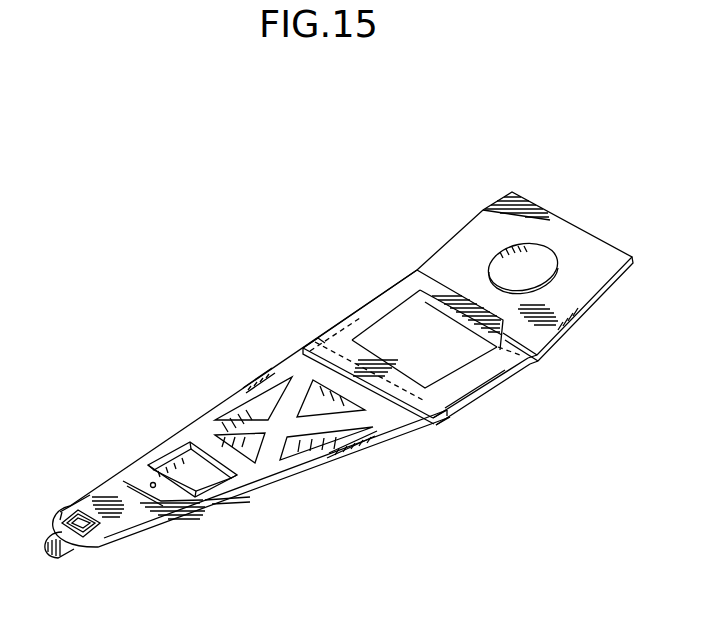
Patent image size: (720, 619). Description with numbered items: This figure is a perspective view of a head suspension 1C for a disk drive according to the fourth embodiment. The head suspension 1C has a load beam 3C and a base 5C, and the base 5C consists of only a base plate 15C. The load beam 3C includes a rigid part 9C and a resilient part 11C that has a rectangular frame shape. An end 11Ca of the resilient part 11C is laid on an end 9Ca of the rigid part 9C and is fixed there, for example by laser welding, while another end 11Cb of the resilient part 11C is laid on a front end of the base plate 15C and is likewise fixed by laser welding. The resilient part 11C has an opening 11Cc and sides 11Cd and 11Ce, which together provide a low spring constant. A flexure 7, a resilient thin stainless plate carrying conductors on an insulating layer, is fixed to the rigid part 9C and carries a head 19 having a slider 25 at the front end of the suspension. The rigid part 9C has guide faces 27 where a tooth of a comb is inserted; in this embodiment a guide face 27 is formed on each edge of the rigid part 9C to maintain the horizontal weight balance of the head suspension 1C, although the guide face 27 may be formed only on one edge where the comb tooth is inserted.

The head suspension 1C is at (279, 198).
The load beam 3C is at (208, 405).
The base 5C is at (512, 197).
The flexure 7 is at (120, 492).
The rigid part 9C is at (153, 445).
The end of the rigid part 9Ca is at (433, 422).
The resilient part 11C is at (333, 322).
The end of the resilient part 11Ca is at (303, 346).
The another end of the resilient part 11Cb is at (452, 292).
The opening 11Cc is at (408, 330).
The side of the resilient part 11Cd is at (318, 330).
The side of the resilient part 11Ce is at (490, 378).
The base plate 15C is at (487, 210).
The head 19 is at (68, 557).
The slider 25 is at (87, 495).
The guide face 27 is at (257, 378).